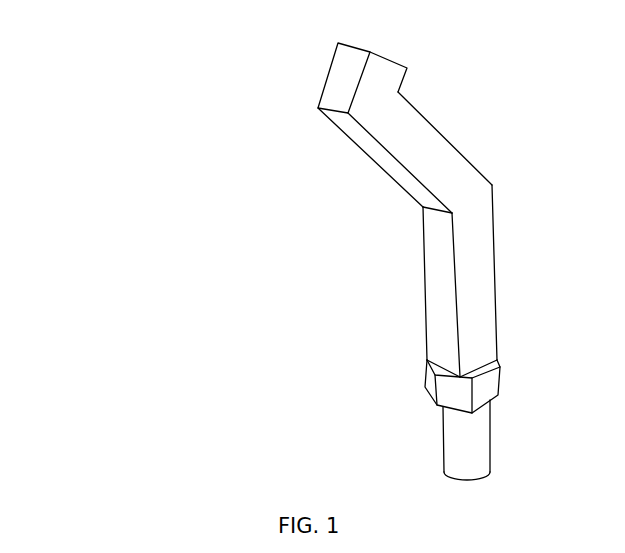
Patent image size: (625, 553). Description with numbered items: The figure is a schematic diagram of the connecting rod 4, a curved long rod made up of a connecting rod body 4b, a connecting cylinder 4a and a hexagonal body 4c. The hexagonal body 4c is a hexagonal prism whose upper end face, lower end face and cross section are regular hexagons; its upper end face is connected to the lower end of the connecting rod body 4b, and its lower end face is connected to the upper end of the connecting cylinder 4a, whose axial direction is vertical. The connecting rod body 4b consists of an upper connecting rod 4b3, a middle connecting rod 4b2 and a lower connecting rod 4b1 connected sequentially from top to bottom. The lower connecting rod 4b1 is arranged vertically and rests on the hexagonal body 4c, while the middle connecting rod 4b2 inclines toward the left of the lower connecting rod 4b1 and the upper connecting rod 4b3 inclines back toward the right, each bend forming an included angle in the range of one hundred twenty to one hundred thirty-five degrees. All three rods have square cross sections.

The connecting rod 4 is at (112, 87).
The connecting cylinder 4a is at (404, 440).
The connecting rod body 4b is at (432, 228).
The lower connecting rod 4b1 is at (401, 281).
The middle connecting rod 4b2 is at (454, 152).
The upper connecting rod 4b3 is at (421, 70).
The hexagonal body 4c is at (402, 381).